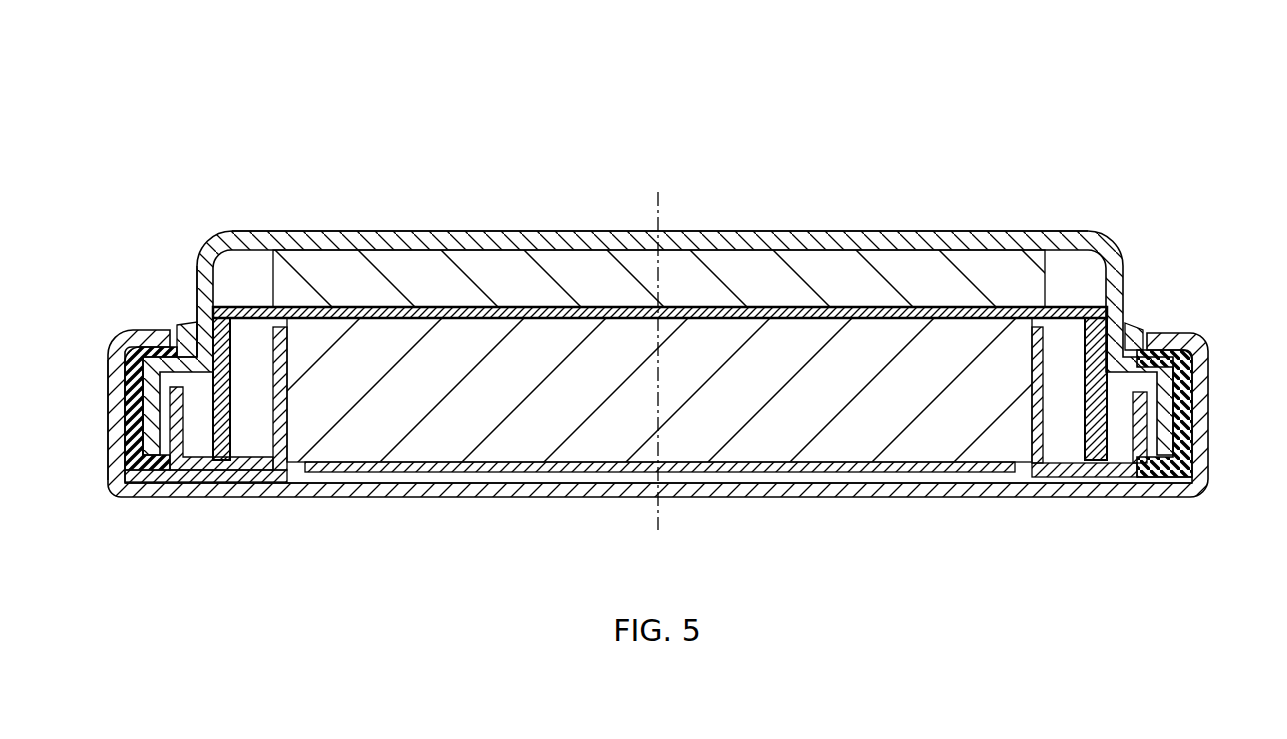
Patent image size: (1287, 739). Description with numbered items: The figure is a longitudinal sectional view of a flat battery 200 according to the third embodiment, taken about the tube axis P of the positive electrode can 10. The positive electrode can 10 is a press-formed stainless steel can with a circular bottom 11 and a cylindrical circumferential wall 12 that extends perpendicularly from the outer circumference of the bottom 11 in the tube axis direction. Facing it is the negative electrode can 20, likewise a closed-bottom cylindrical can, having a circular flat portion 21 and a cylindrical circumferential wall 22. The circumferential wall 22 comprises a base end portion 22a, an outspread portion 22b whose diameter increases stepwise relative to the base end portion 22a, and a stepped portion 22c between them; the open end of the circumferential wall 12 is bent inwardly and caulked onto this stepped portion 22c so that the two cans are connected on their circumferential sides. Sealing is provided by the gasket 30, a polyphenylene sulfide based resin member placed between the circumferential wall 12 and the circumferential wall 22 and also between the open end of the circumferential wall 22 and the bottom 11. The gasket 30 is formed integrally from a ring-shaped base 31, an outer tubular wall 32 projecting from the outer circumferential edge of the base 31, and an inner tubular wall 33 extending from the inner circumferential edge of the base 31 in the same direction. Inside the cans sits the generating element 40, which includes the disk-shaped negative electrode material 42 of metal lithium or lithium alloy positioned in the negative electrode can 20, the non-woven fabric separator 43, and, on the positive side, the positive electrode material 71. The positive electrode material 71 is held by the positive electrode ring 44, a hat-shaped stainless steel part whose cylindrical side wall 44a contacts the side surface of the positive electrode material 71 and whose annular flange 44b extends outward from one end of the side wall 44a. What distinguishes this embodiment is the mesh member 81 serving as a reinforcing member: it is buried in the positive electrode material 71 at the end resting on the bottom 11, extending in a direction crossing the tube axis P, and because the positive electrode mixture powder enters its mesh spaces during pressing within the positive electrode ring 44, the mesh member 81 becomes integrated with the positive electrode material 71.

The flat battery 200 is at (653, 328).
The positive electrode can 10 is at (624, 458).
The bottom 11 is at (868, 494).
The circumferential wall 12 is at (117, 420).
The negative electrode can 20 is at (601, 294).
The flat portion 21 is at (580, 243).
The circumferential wall 22 is at (586, 310).
The base end portion 22a is at (197, 258).
The outspread portion 22b is at (150, 400).
The stepped portion 22c is at (133, 332).
The gasket 30 is at (701, 459).
The base 31 is at (1170, 477).
The outer tubular wall 32 is at (1177, 453).
The inner tubular wall 33 is at (1137, 423).
The generating element 40 is at (651, 362).
The negative electrode material 42 is at (455, 268).
The separator 43 is at (740, 318).
The positive electrode ring 44 is at (1050, 435).
The side wall 44a is at (290, 400).
The flange 44b is at (193, 478).
The positive electrode material 71 is at (748, 435).
The mesh member 81 is at (597, 473).
The tube axis P is at (662, 207).